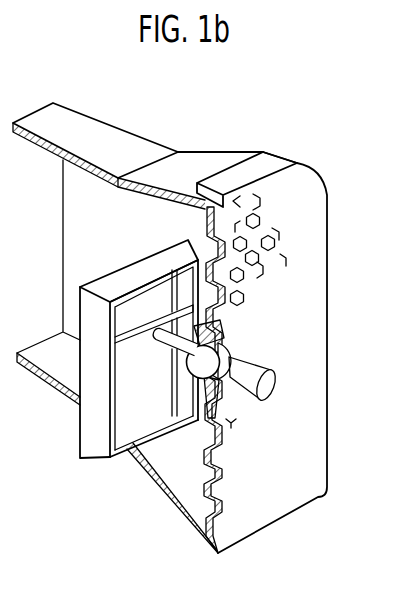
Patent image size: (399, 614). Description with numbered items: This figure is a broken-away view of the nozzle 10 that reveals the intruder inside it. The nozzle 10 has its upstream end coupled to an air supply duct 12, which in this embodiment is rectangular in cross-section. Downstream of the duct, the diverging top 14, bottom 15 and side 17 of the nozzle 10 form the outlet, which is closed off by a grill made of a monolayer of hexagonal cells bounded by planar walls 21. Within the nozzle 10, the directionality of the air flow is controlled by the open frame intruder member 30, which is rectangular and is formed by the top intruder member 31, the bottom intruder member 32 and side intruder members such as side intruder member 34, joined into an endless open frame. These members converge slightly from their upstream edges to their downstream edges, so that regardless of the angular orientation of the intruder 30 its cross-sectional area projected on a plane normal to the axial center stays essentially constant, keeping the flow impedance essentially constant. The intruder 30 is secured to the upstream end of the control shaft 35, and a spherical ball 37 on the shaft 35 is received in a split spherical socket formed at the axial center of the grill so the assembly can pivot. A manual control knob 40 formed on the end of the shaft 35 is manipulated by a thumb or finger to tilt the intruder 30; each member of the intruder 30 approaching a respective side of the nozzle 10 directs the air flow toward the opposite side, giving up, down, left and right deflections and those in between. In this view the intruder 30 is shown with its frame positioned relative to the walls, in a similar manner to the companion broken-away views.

The nozzle 10 is at (270, 120).
The air supply duct 12 is at (76, 128).
The top 14 is at (189, 164).
The bottom 15 is at (177, 507).
The side 17 is at (228, 153).
The planar walls 21 is at (263, 229).
The open frame intruder member 30 is at (77, 275).
The top intruder member 31 is at (116, 271).
The bottom intruder member 32 is at (133, 457).
The side intruder member 34 is at (185, 283).
The control shaft 35 is at (80, 444).
The spherical ball 37 is at (194, 422).
The manual control knob 40 is at (279, 378).